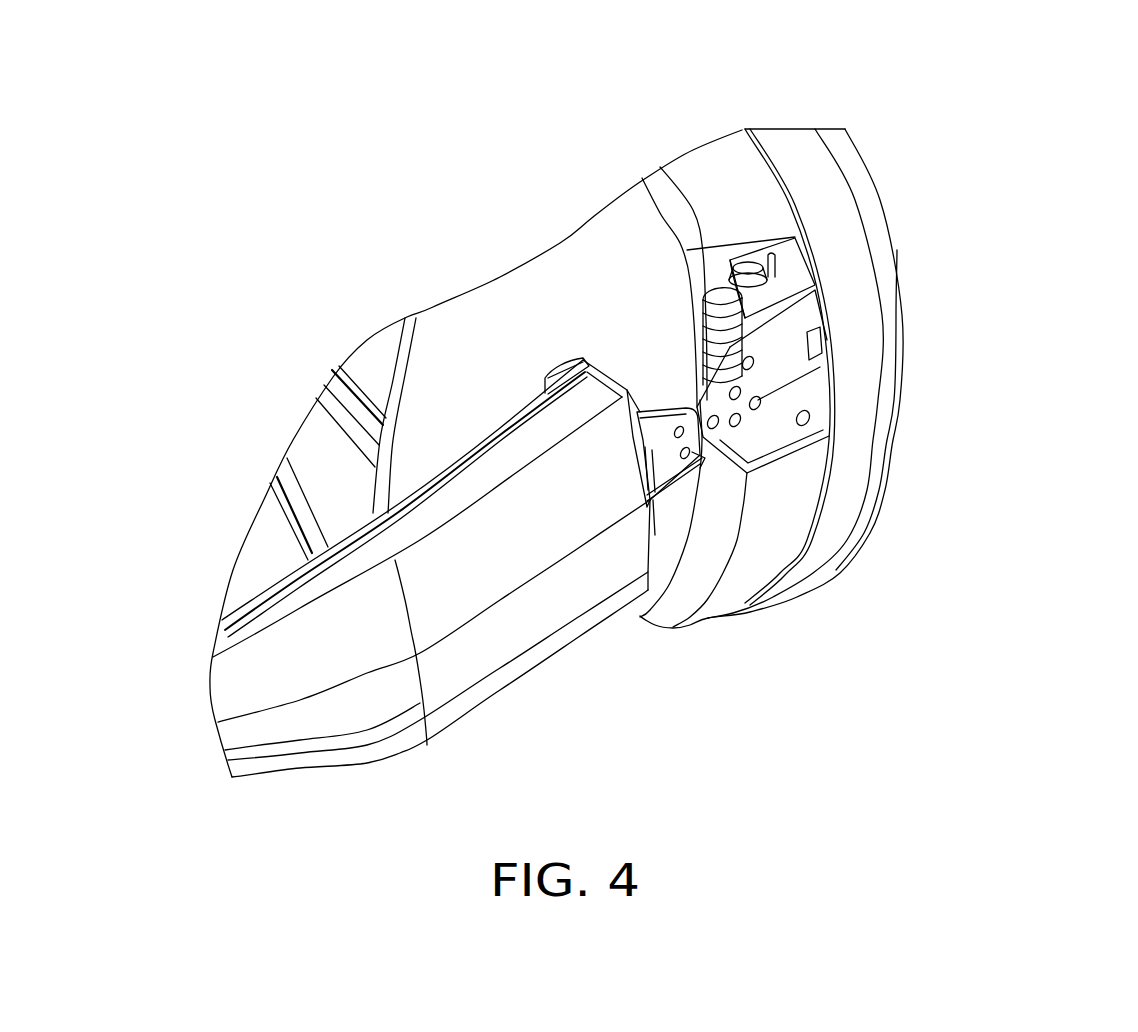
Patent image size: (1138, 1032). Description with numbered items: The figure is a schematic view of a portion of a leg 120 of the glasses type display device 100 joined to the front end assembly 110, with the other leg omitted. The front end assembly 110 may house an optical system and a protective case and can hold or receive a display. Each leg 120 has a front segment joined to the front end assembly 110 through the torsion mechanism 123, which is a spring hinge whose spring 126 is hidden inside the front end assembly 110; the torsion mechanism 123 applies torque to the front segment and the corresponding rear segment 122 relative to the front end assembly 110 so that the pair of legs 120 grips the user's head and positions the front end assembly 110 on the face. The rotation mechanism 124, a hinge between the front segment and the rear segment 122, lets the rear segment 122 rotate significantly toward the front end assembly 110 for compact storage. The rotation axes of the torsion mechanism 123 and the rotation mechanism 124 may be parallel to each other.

The glasses type display device 100 is at (1015, 163).
The front end assembly 110 is at (823, 178).
The leg 120 is at (488, 738).
The rear segment 122 is at (535, 618).
The torsion mechanism 123 is at (785, 377).
The rotation mechanism 124 is at (667, 460).
The spring 126 is at (723, 318).